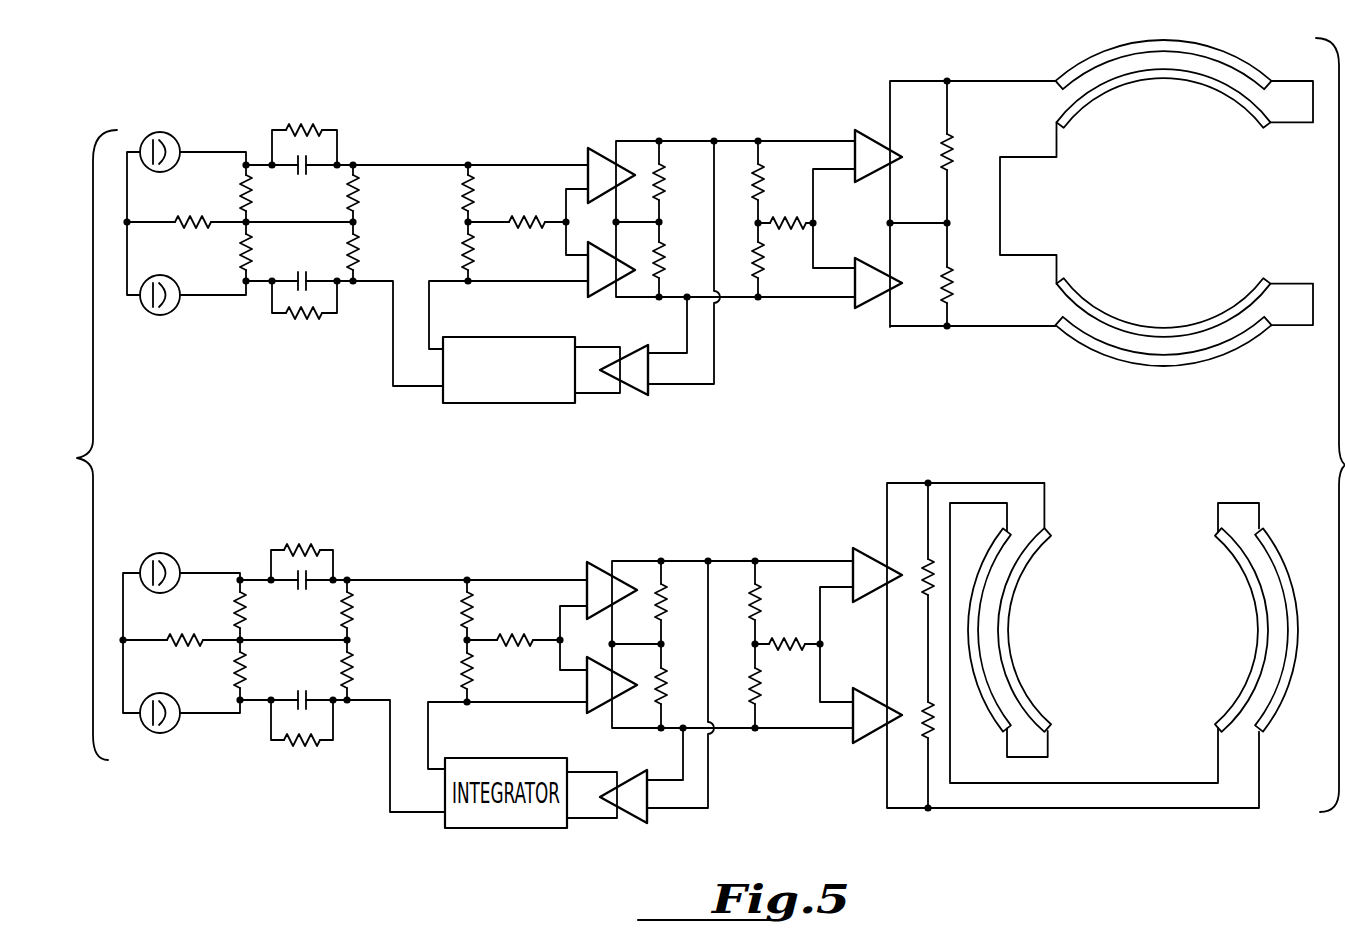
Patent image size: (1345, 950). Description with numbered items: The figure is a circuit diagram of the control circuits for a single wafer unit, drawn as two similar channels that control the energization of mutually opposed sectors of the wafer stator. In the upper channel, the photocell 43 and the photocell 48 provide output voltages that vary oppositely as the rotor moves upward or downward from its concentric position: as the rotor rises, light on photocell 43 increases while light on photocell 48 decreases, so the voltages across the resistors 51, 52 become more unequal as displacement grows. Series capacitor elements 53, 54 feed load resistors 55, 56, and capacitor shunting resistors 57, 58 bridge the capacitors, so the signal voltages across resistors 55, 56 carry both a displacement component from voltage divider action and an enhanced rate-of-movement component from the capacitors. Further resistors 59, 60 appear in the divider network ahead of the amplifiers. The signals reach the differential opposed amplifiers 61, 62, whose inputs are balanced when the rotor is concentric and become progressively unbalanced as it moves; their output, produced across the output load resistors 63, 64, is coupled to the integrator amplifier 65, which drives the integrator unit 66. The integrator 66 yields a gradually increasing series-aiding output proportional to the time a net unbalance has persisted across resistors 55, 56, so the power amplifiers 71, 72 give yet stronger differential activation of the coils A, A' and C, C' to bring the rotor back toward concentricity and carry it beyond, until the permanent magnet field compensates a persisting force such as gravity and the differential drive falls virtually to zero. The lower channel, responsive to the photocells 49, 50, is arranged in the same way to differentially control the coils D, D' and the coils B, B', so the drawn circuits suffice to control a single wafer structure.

The photocell 43 is at (160, 132).
The photocell 48 is at (160, 314).
The photocell 49 is at (163, 555).
The photocell 50 is at (165, 727).
The resistor 51 is at (240, 190).
The resistor 52 is at (240, 243).
The series capacitor element 53 is at (298, 172).
The series capacitor element 54 is at (313, 268).
The load resistor 55 is at (358, 200).
The load resistor 56 is at (358, 252).
The capacitor shunting resistor 57 is at (302, 125).
The capacitor shunting resistor 58 is at (305, 322).
The resistor 59 is at (472, 195).
The resistor 60 is at (472, 258).
The differential opposed amplifier 61 is at (597, 158).
The differential opposed amplifier 62 is at (598, 290).
The output load resistor 63 is at (662, 178).
The output load resistor 64 is at (664, 270).
The integrator amplifier 65 is at (637, 385).
The integrator unit 66 is at (469, 405).
The power amplifier 71 is at (862, 142).
The power amplifier 72 is at (872, 290).
The coil A is at (1159, 62).
The coil A' is at (1164, 100).
The coil B is at (1293, 629).
The coil B' is at (1236, 630).
The coil C is at (1164, 363).
The coil C' is at (1164, 301).
The coil D is at (989, 626).
The coil D' is at (1042, 630).